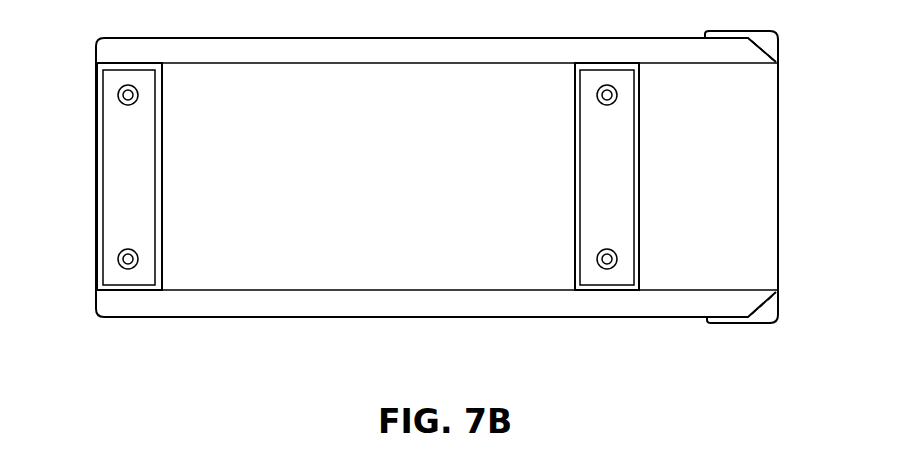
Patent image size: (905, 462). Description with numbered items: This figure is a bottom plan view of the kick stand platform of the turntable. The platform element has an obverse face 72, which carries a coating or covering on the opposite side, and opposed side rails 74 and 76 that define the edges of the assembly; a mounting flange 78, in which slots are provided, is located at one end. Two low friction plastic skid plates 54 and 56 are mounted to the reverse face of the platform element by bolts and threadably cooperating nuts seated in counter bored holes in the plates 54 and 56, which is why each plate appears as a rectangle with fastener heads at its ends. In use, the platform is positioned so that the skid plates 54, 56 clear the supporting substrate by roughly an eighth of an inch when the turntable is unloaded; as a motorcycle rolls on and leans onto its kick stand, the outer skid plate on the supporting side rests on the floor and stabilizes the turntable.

The low friction plastic skid plate 54 is at (108, 182).
The low friction plastic skid plate 56 is at (617, 125).
The obverse face 72 is at (765, 232).
The side rail 74 is at (241, 45).
The side rail 76 is at (308, 310).
The mounting flange 78 is at (777, 41).